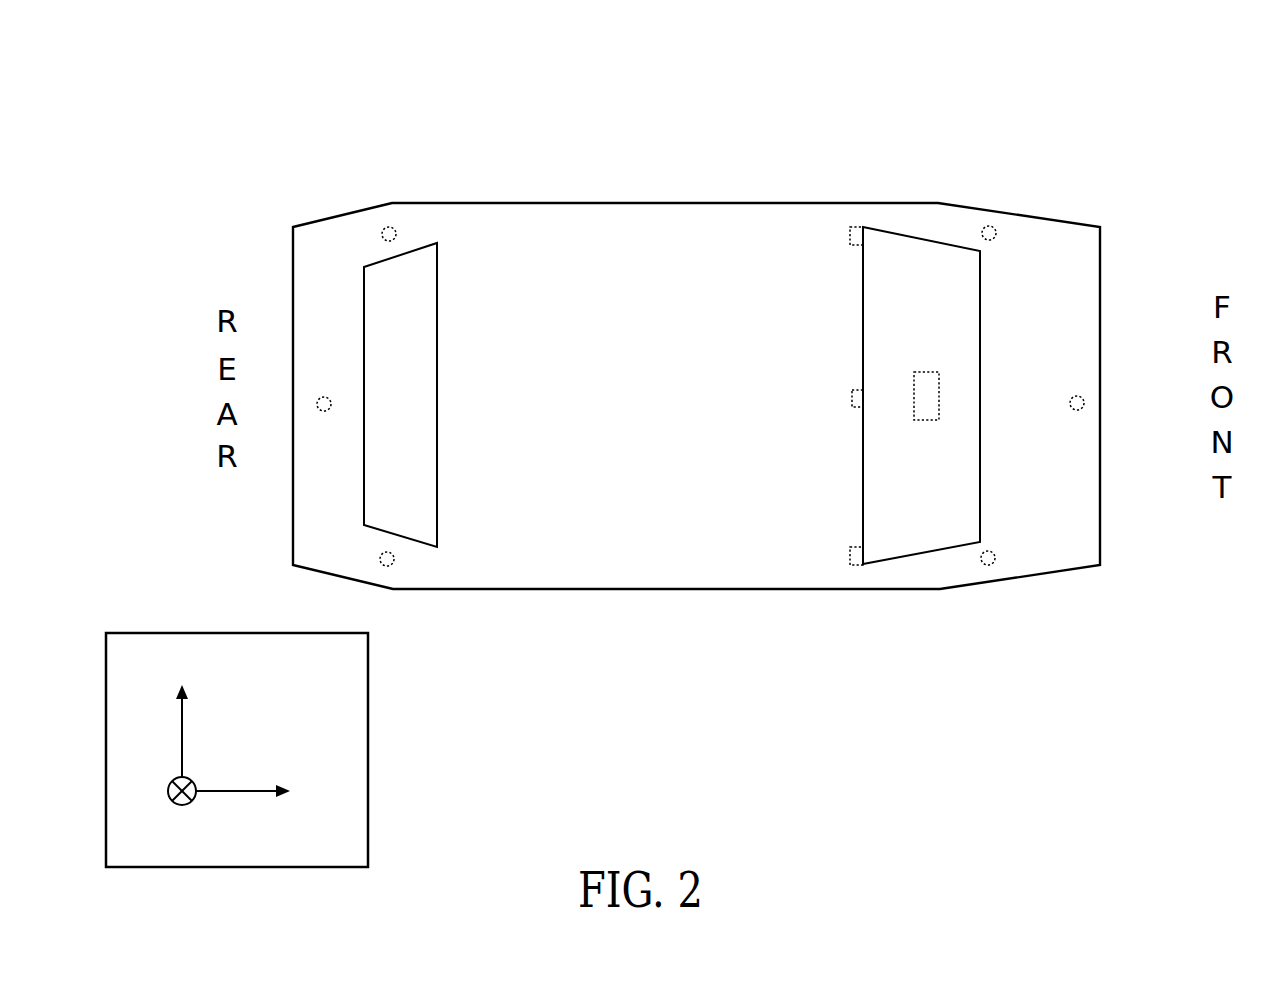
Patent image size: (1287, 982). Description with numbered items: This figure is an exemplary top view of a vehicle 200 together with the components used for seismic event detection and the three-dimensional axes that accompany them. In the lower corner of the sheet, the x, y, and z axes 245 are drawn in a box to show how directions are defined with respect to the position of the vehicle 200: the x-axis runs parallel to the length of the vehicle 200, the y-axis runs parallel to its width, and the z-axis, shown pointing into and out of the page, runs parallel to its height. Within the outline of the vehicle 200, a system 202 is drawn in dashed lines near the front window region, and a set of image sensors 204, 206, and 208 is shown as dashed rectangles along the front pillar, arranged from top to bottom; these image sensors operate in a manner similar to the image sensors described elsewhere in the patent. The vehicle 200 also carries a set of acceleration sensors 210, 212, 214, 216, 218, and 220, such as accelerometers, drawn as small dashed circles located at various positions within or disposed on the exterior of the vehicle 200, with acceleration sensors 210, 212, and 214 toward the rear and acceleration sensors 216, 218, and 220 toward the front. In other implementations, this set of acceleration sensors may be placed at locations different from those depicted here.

The vehicle 200 is at (992, 63).
The system 202 is at (933, 420).
The image sensor 204 is at (855, 227).
The image sensor 206 is at (859, 390).
The image sensor 208 is at (855, 547).
The acceleration sensor 210 is at (391, 227).
The acceleration sensor 212 is at (327, 397).
The acceleration sensor 214 is at (389, 566).
The acceleration sensor 216 is at (989, 565).
The acceleration sensor 218 is at (1080, 396).
The acceleration sensor 220 is at (991, 226).
The x, y, and z axes 245 is at (122, 633).